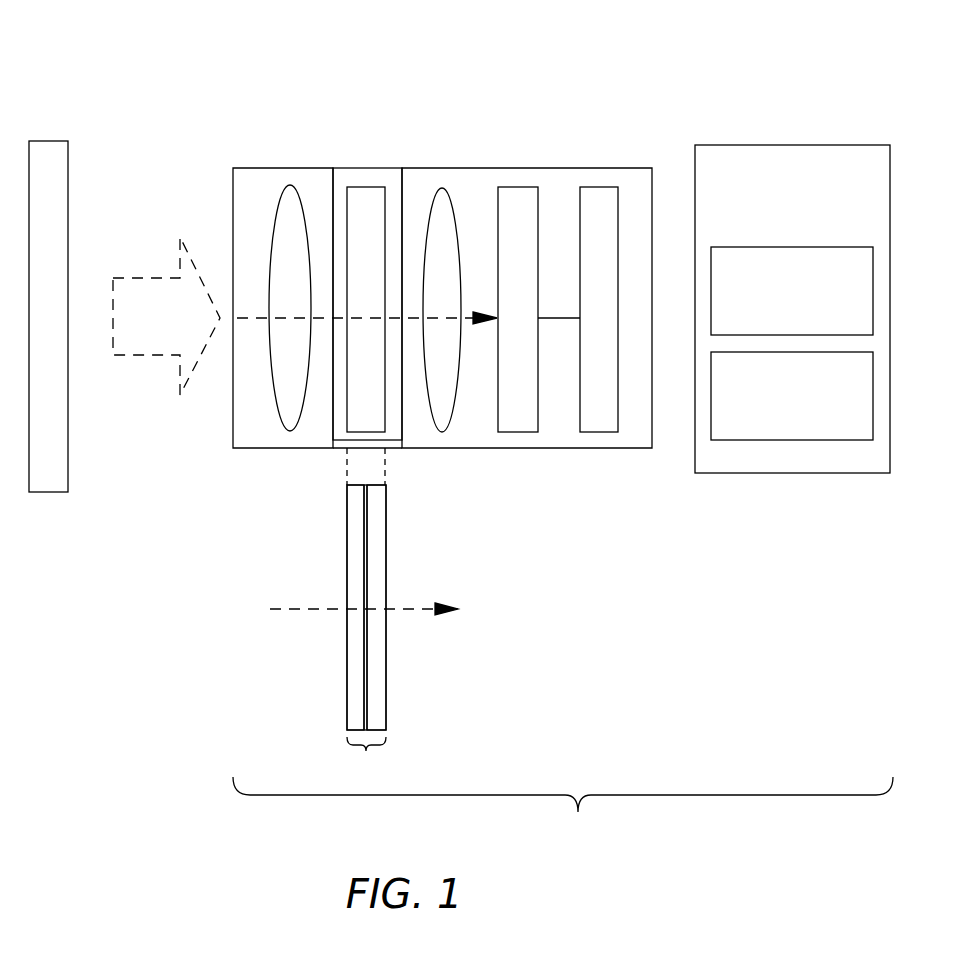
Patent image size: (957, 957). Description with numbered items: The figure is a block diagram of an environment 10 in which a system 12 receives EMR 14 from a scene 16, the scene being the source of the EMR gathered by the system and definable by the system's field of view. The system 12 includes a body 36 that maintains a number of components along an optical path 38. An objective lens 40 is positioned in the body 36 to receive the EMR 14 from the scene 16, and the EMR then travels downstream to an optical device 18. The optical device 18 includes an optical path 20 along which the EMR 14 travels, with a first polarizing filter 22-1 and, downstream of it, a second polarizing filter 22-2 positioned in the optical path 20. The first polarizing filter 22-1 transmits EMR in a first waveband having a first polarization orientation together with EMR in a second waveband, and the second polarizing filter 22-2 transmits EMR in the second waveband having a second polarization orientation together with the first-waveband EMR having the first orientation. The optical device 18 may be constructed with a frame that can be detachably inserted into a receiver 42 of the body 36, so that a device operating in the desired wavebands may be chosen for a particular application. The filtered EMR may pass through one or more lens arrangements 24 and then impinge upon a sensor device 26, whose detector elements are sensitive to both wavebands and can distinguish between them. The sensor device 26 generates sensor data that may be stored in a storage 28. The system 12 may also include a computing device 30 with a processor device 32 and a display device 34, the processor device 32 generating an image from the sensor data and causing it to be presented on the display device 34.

The environment 10 is at (182, 29).
The system 12 is at (563, 809).
The EMR 14 is at (140, 278).
The scene 16 is at (50, 141).
The optical device 18 is at (366, 187).
The optical path 20 is at (297, 608).
The first polarizing filter 22-1 is at (347, 501).
The second polarizing filter 22-2 is at (386, 501).
The lens arrangements 24 is at (442, 188).
The sensor device 26 is at (518, 187).
The storage 28 is at (599, 187).
The computing device 30 is at (779, 228).
The processor device 32 is at (779, 325).
The display device 34 is at (779, 431).
The body 36 is at (237, 168).
The optical path 38 is at (245, 315).
The objective lens 40 is at (291, 185).
The receiver 42 is at (353, 160).